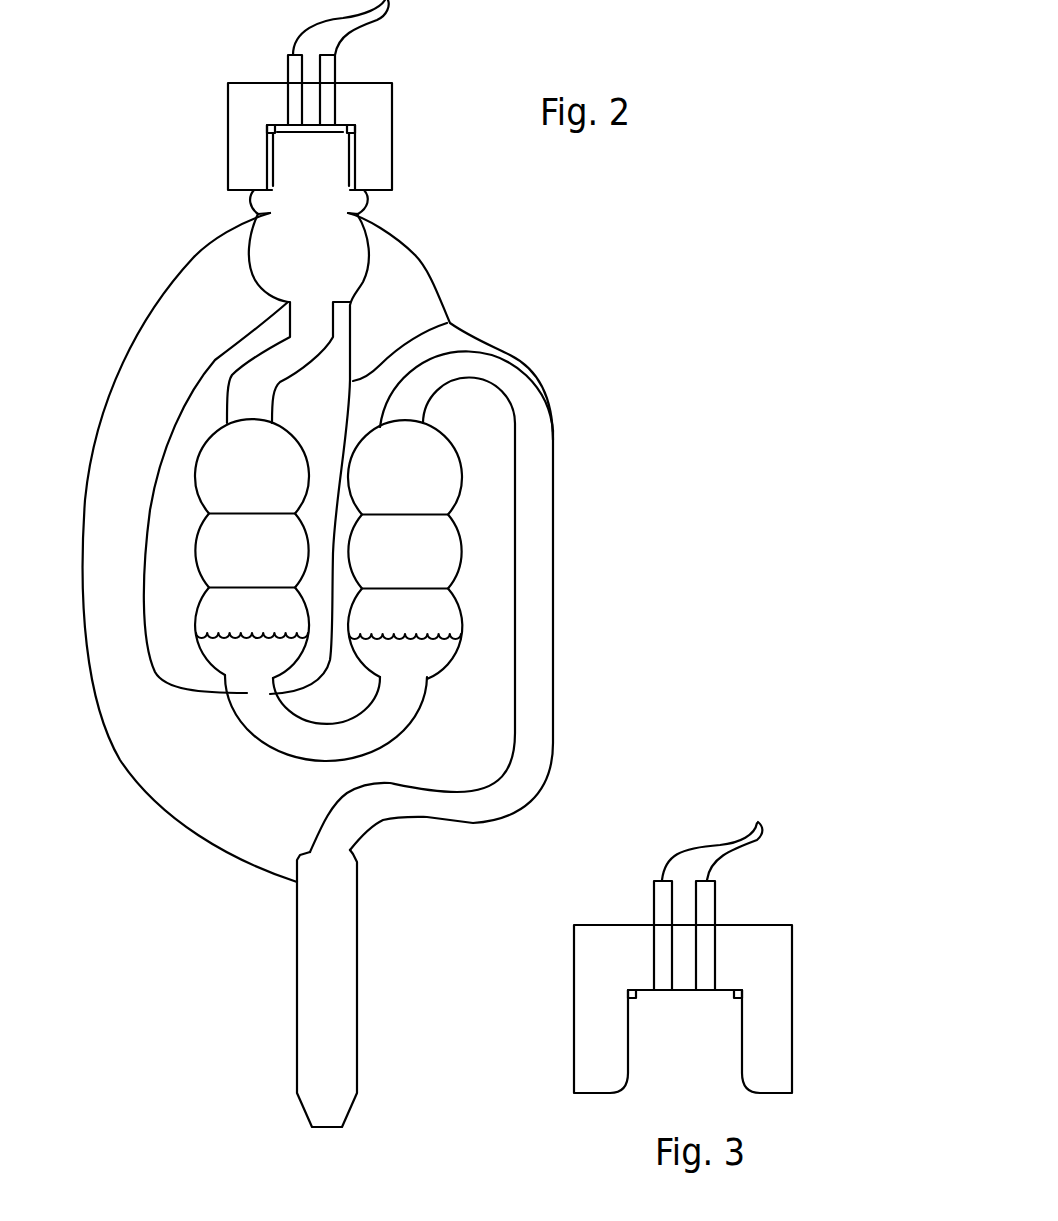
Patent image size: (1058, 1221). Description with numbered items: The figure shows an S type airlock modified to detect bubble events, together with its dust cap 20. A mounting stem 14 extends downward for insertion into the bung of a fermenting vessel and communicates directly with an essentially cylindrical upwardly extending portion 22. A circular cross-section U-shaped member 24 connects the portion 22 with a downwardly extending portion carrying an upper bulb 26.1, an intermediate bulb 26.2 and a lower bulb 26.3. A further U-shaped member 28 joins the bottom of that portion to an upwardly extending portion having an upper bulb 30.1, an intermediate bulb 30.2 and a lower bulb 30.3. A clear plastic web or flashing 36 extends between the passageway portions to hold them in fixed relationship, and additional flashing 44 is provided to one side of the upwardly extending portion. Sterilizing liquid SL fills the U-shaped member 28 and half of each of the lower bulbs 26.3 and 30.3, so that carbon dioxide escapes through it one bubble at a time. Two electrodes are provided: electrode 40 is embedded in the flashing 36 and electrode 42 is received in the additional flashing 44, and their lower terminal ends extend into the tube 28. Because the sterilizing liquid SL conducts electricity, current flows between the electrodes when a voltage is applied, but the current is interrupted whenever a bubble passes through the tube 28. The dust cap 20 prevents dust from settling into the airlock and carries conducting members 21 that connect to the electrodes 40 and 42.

In FIG. 2, the mounting stem 14 is at (345, 907).
In FIG. 3, the dust cap 20 is at (768, 925).
In FIG. 3, the conducting members 21 is at (716, 891).
In FIG. 2, the upwardly extending portion 22 is at (537, 652).
In FIG. 2, the U-shaped member 24 is at (493, 367).
In FIG. 2, the upper bulb 26.1 is at (455, 447).
In FIG. 2, the intermediate bulb 26.2 is at (458, 530).
In FIG. 2, the lower bulb 26.3 is at (462, 610).
In FIG. 2, the U-shaped member 28 is at (280, 745).
In FIG. 2, the upper bulb 30.1 is at (197, 472).
In FIG. 2, the intermediate bulb 30.2 is at (197, 537).
In FIG. 2, the lower bulb 30.3 is at (197, 600).
In FIG. 2, the flashing 36 is at (398, 302).
In FIG. 2, the electrode 40 is at (447, 323).
In FIG. 2, the electrode 42 is at (193, 258).
In FIG. 2, the additional flashing 44 is at (153, 368).
In FIG. 2, the sterilizing liquid SL is at (380, 740).